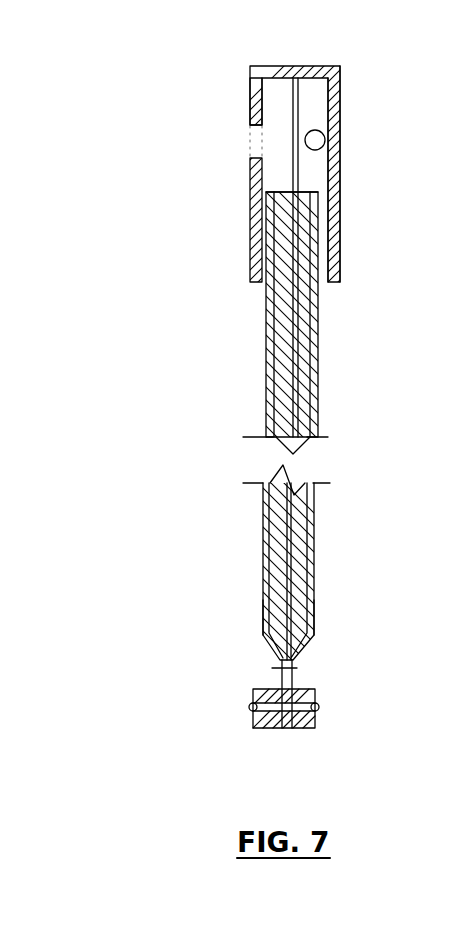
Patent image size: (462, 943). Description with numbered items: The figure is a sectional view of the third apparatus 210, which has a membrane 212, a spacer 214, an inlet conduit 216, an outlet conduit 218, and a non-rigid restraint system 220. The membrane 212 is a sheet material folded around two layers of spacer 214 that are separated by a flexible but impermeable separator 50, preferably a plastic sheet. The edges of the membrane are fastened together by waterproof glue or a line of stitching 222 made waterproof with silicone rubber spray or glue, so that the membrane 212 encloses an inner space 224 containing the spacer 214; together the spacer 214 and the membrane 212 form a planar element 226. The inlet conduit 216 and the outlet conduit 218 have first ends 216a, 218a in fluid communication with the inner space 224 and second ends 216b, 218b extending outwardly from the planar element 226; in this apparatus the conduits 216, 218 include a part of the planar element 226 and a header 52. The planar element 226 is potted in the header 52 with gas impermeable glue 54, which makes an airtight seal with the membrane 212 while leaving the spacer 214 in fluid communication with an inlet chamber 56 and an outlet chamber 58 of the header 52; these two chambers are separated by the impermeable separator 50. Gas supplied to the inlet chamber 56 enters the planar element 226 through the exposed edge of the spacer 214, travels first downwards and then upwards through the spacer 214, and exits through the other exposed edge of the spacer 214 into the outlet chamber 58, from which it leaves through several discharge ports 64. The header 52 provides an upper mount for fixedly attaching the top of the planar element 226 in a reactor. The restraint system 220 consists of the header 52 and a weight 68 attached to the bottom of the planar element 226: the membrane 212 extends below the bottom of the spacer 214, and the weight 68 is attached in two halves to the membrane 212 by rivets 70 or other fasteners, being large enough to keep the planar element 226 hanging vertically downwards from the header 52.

The separator 50 is at (303, 566).
The header 52 is at (278, 65).
The gas impermeable glue 54 is at (256, 224).
The inlet chamber 56 is at (335, 165).
The outlet chamber 58 is at (258, 158).
The discharge ports 64 is at (252, 142).
The weight 68 is at (305, 730).
The rivets 70 is at (315, 707).
The third apparatus 210 is at (155, 525).
The membrane 212 is at (267, 338).
The spacer 214 is at (305, 330).
The inlet conduit 216 is at (330, 183).
The first end of inlet conduit 216a is at (303, 300).
The second end of inlet conduit 216b is at (325, 132).
The outlet conduit 218 is at (266, 192).
The first end of outlet conduit 218a is at (267, 294).
The second end of outlet conduit 218b is at (250, 132).
The non-rigid restraint system 220 is at (342, 72).
The line of stitching 222 is at (293, 661).
The inner space 224 is at (303, 417).
The planar element 226 is at (332, 618).